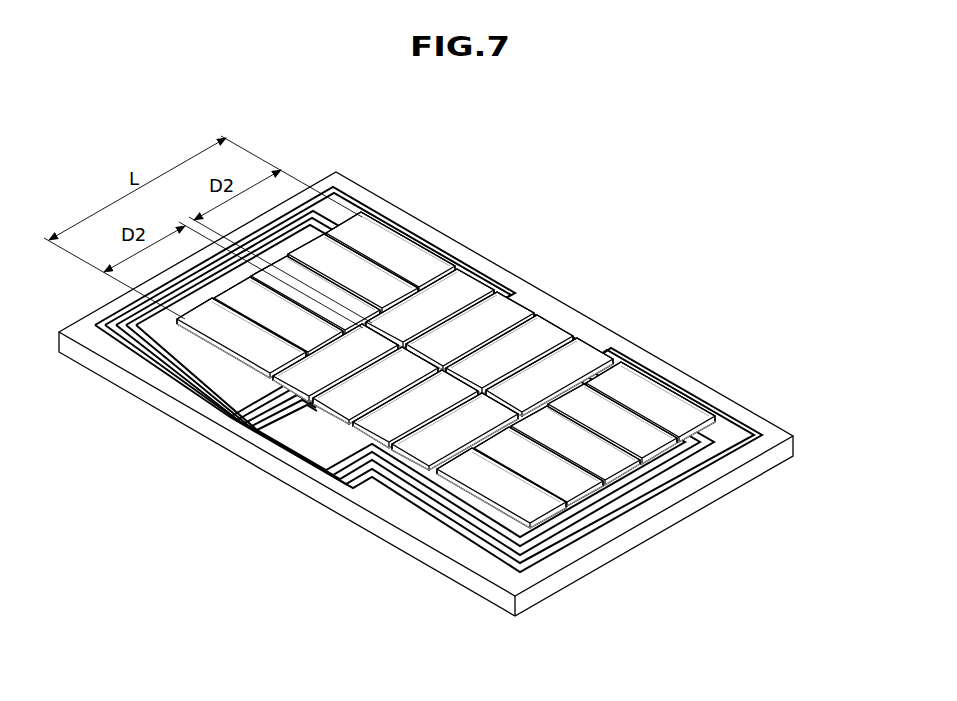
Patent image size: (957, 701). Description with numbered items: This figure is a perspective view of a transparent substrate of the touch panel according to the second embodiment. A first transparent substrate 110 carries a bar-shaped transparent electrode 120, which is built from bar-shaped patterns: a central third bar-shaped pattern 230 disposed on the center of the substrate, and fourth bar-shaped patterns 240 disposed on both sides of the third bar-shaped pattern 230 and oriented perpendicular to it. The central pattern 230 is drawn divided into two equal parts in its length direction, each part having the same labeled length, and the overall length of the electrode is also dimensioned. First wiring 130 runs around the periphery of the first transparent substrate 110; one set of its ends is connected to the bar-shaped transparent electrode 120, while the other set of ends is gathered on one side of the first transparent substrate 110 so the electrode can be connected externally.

The first transparent substrate 110 is at (783, 446).
The first bar-shaped transparent electrode 120 is at (465, 359).
The first wiring 130 is at (707, 467).
The third bar-shaped pattern 230 is at (456, 357).
The fourth bar-shaped patterns 240 is at (398, 243).